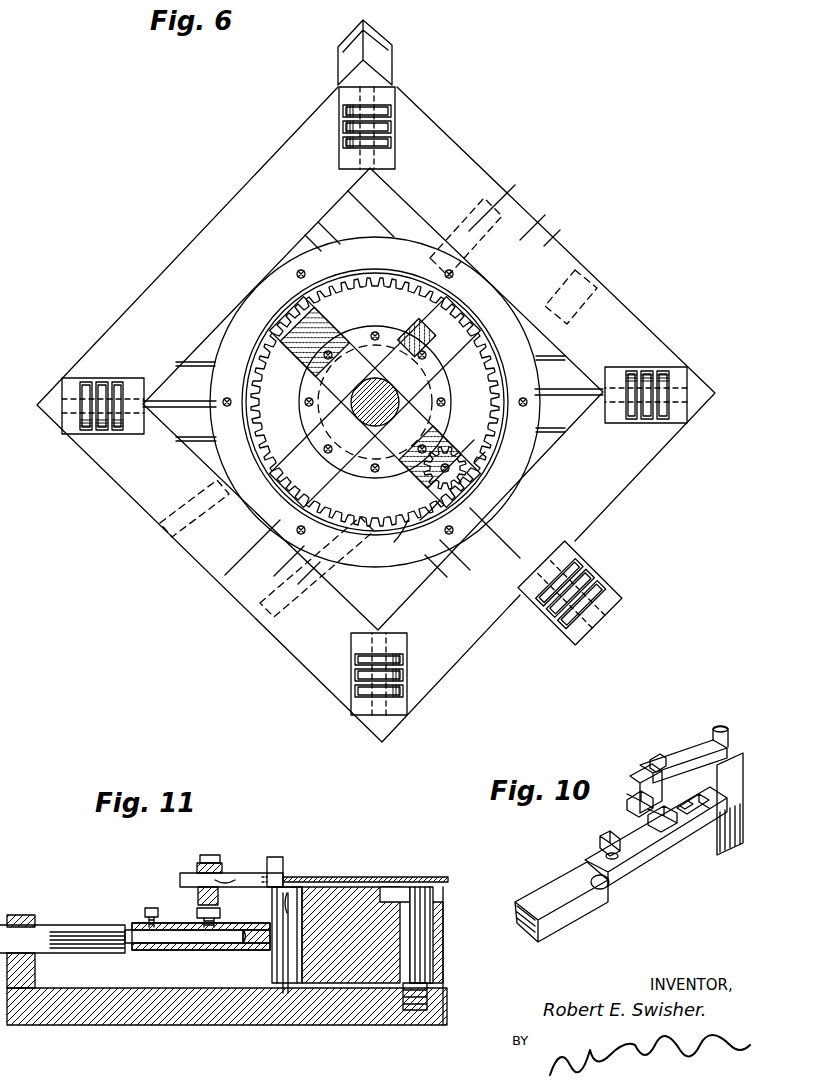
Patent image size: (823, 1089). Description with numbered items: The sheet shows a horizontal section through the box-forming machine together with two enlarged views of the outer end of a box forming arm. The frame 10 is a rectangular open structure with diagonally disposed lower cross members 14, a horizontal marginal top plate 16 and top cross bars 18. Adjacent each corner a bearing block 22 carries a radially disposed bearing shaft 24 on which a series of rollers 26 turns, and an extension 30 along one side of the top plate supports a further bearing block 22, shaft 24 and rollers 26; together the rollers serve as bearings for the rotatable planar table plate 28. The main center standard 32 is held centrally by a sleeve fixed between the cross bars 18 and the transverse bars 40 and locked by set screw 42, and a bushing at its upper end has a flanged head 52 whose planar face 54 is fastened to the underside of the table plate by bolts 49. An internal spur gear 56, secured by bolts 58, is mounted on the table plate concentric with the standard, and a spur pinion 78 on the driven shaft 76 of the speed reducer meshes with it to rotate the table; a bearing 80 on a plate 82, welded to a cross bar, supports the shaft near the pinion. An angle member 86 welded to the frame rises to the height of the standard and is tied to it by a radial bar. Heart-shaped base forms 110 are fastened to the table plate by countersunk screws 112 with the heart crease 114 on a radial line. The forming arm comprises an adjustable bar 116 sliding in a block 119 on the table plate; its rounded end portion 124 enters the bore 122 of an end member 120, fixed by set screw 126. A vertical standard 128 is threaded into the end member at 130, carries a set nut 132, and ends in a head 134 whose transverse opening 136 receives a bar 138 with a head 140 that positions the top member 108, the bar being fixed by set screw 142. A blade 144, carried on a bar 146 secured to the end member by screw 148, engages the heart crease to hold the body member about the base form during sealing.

In FIG. 6, the frame 10 is at (388, 414).
In FIG. 6, the lower cross members 14 is at (188, 392).
In FIG. 6, the marginal top plate 16 is at (373, 399).
In FIG. 6, the top cross bars 18 is at (210, 462).
In FIG. 6, the bearing block 22 is at (396, 150).
In FIG. 6, the bearing shaft 24 is at (338, 170).
In FIG. 6, the rollers 26 is at (340, 132).
In FIG. 11, the table plate 28 is at (54, 1026).
In FIG. 6, the extension 30 is at (550, 638).
In FIG. 6, the main center standard 32 is at (355, 382).
In FIG. 6, the transverse bars 40 is at (391, 312).
In FIG. 6, the set screw 42 is at (468, 324).
In FIG. 6, the bolts 49 is at (368, 338).
In FIG. 6, the flanged head 52 is at (346, 480).
In FIG. 6, the planar face 54 is at (375, 402).
In FIG. 6, the internal spur gear 56 is at (330, 340).
In FIG. 6, the bolts 58 is at (304, 274).
In FIG. 6, the driven shaft 76 is at (466, 482).
In FIG. 6, the spur pinion 78 is at (436, 528).
In FIG. 6, the bearing 80 is at (486, 454).
In FIG. 6, the plate 82 is at (398, 534).
In FIG. 6, the angle member 86 is at (392, 53).
In FIG. 11, the top member 108 is at (444, 876).
In FIG. 11, the base form 110 is at (322, 984).
In FIG. 11, the screws 112 is at (422, 966).
In FIG. 11, the heart crease 114 is at (294, 890).
In FIG. 11, the adjustable bar 116 is at (64, 926).
In FIG. 10, the adjustable bar 116 is at (554, 932).
In FIG. 11, the block 119 is at (35, 974).
In FIG. 11, the end member 120 is at (174, 950).
In FIG. 10, the end member 120 is at (652, 878).
In FIG. 11, the bore 122 is at (240, 952).
In FIG. 11, the rounded end portion 124 is at (130, 952).
In FIG. 10, the rounded end portion 124 is at (618, 894).
In FIG. 11, the set screw 126 is at (144, 910).
In FIG. 10, the set screw 126 is at (600, 834).
In FIG. 11, the vertical standard 128 is at (218, 900).
In FIG. 11, the threaded connection 130 is at (198, 906).
In FIG. 10, the threaded connection 130 is at (648, 816).
In FIG. 10, the set nut 132 is at (650, 832).
In FIG. 11, the head 134 is at (216, 866).
In FIG. 10, the head 134 is at (646, 770).
In FIG. 11, the transverse opening 136 is at (226, 876).
In FIG. 10, the transverse opening 136 is at (632, 790).
In FIG. 11, the bar 138 is at (180, 874).
In FIG. 10, the bar 138 is at (684, 750).
In FIG. 11, the head 140 is at (284, 866).
In FIG. 10, the head 140 is at (722, 728).
In FIG. 11, the set screw 142 is at (206, 854).
In FIG. 10, the set screw 142 is at (656, 754).
In FIG. 11, the blade 144 is at (288, 986).
In FIG. 10, the blade 144 is at (734, 836).
In FIG. 10, the bar 146 is at (742, 780).
In FIG. 10, the screw 148 is at (692, 818).